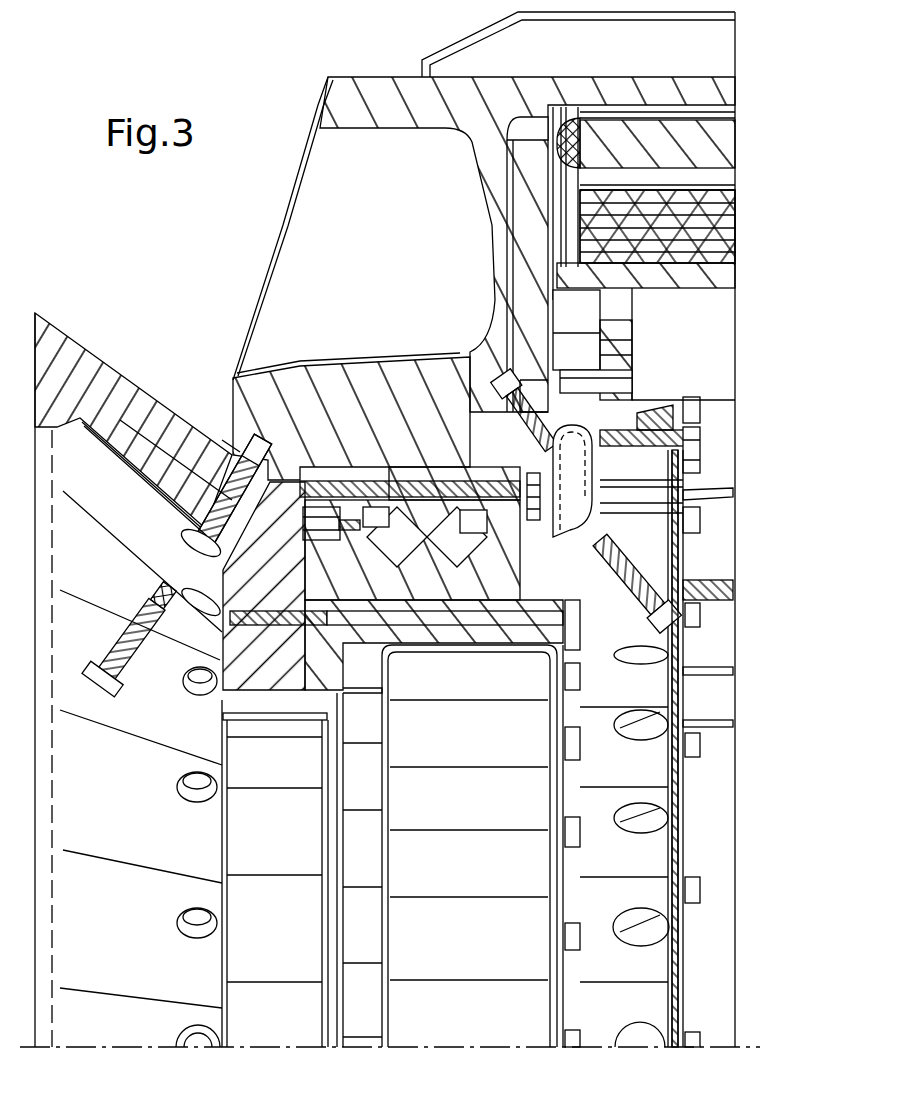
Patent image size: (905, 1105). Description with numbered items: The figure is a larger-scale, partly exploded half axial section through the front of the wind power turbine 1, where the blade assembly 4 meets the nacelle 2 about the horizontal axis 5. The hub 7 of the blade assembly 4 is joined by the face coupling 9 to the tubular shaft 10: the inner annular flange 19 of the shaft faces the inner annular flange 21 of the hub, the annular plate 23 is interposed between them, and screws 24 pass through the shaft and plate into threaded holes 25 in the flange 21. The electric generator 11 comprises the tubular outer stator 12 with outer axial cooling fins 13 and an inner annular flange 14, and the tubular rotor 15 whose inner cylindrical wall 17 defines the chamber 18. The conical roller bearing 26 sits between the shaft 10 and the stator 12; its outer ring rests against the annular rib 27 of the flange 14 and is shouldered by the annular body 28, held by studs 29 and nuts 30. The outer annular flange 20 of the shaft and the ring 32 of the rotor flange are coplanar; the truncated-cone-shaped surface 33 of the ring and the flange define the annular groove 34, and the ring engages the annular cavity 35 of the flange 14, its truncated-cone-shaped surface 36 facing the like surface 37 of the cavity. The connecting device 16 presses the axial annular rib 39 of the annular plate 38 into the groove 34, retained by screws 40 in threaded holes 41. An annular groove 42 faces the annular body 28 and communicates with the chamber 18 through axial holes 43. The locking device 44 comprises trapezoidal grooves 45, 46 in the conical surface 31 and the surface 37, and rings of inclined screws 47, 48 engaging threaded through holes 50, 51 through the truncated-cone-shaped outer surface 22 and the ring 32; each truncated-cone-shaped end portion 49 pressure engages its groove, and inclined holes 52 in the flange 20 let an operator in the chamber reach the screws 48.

The wind power turbine 1 is at (143, 290).
The nacelle 2 is at (752, 95).
The blade assembly 4 is at (78, 300).
The axis 5 is at (673, 877).
The hub 7 is at (95, 397).
The face coupling 9 is at (392, 993).
The tubular shaft 10 is at (498, 1005).
The electric generator 11 is at (747, 193).
The tubular outer stator 12 is at (690, 73).
The outer axial cooling fins 13 is at (707, 33).
The inner annular flange 14 is at (285, 210).
The tubular rotor 15 is at (722, 258).
The connecting device 16 is at (695, 585).
The inner cylindrical wall 17 is at (722, 275).
The chamber 18 is at (718, 287).
The inner annular flange 19 is at (355, 930).
The outer annular flange 20 is at (700, 590).
The inner annular flange 21 is at (240, 695).
The truncated-cone-shaped outer surface 22 is at (233, 457).
The annular plate 23 is at (390, 660).
The screws 24 is at (540, 643).
The threaded hole 25 is at (232, 622).
The conical roller bearing 26 is at (351, 507).
The annular rib 27 is at (322, 364).
The annular body 28 is at (440, 470).
The studs 29 is at (414, 463).
The nut 30 is at (463, 620).
The conical surface 31 is at (200, 517).
The ring 32 is at (613, 387).
The truncated-cone-shaped surface 33 is at (662, 420).
The annular groove 34 is at (703, 432).
The annular cavity 35 is at (520, 420).
The truncated-cone-shaped surface 36 is at (540, 395).
The truncated-cone-shaped surface 37 is at (627, 393).
The annular plate 38 is at (677, 697).
The axial annular rib 39 is at (710, 413).
The screws 40 is at (700, 443).
The threaded hole 41 is at (700, 472).
The annular groove 42 is at (545, 560).
The axial holes 43 is at (700, 520).
The locking device 44 is at (187, 487).
The annular groove 45 is at (230, 447).
The annular groove 46 is at (530, 405).
The screws 47 is at (100, 682).
The screws 48 is at (683, 640).
The truncated-cone-shaped end portion 49 is at (162, 588).
The threaded through hole 50 is at (185, 540).
The threaded through hole 51 is at (670, 405).
The inclined holes 52 is at (625, 595).